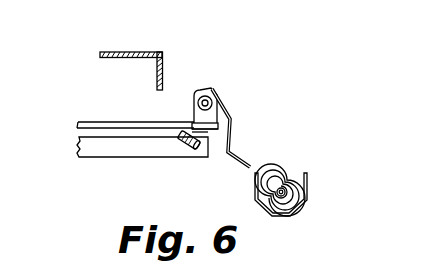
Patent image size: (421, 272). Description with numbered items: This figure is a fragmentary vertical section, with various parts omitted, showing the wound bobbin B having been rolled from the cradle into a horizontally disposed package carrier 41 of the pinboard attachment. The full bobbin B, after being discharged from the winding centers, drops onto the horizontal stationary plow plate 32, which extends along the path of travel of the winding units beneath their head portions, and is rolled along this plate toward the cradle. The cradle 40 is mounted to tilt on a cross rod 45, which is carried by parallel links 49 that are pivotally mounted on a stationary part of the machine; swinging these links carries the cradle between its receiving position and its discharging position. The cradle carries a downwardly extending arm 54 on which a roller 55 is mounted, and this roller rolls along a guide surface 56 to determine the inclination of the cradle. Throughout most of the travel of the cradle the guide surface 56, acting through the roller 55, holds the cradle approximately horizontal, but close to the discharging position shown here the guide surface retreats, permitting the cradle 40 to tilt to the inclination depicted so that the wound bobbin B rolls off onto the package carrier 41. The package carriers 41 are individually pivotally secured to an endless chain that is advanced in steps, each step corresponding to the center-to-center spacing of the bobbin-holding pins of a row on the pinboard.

The plow plate 32 is at (127, 53).
The parallel links 49 is at (102, 125).
The roller 55 is at (183, 147).
The cross rod 45 is at (213, 95).
The downwardly extending arm 54 is at (211, 136).
The cradle 40 is at (247, 167).
The guide surface 56 is at (217, 136).
The package carrier 41 is at (309, 189).
The bobbin B is at (281, 176).